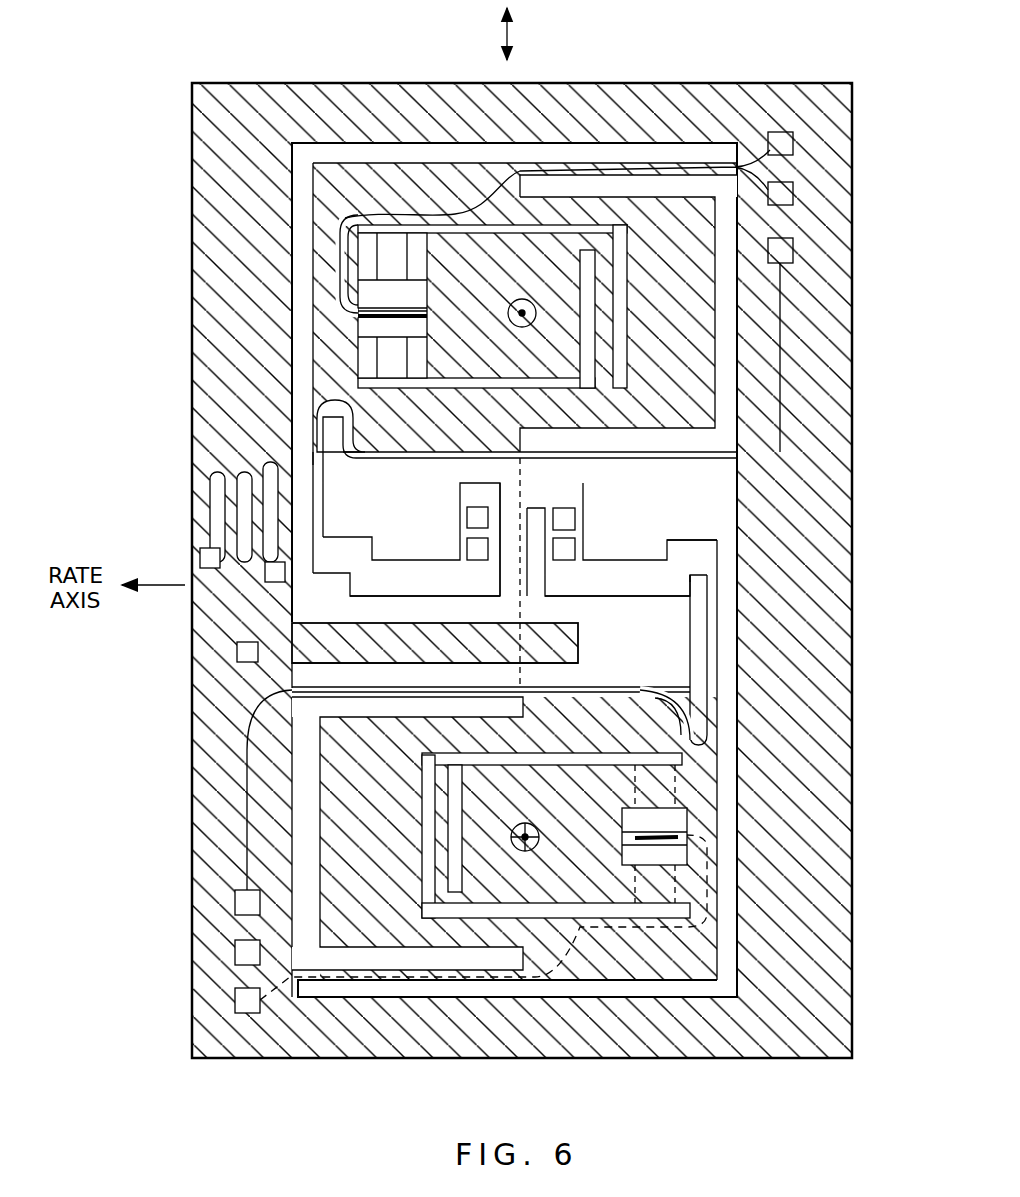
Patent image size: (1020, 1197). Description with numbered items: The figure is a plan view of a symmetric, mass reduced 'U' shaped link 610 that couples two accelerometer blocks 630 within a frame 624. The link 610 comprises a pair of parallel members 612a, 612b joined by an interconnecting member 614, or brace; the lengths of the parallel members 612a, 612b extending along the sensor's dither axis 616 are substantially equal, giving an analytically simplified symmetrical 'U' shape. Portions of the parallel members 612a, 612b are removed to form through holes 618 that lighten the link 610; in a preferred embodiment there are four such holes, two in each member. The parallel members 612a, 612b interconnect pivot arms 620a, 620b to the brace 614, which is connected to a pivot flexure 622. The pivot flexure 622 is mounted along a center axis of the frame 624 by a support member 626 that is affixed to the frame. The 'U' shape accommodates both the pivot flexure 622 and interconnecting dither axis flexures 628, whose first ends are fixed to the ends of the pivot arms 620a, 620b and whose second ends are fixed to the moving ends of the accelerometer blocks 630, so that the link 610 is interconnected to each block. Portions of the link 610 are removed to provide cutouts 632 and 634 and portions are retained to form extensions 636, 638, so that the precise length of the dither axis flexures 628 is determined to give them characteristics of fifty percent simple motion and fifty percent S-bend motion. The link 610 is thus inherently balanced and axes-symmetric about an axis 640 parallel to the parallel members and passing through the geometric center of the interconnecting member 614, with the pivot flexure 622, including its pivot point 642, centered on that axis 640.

The mass reduced 'U' shaped link 610 is at (605, 522).
The parallel member 612a is at (345, 537).
The parallel member 612b is at (585, 492).
The interconnecting member 614 is at (500, 468).
The dither axis 616 is at (515, 38).
The through holes 618 is at (465, 520).
The pivot arm 620a is at (418, 560).
The pivot arm 620b is at (632, 598).
The pivot flexure 622 is at (528, 604).
The frame 624 is at (205, 345).
The support member 626 is at (330, 622).
The interconnecting dither axis flexures 628 is at (313, 440).
The accelerometer blocks 630 is at (305, 282).
The cutout 632 is at (710, 575).
The cutout 634 is at (330, 573).
The extension 636 is at (719, 540).
The extension 638 is at (313, 460).
The axis 640 is at (745, 460).
The pivot point 642 is at (505, 603).